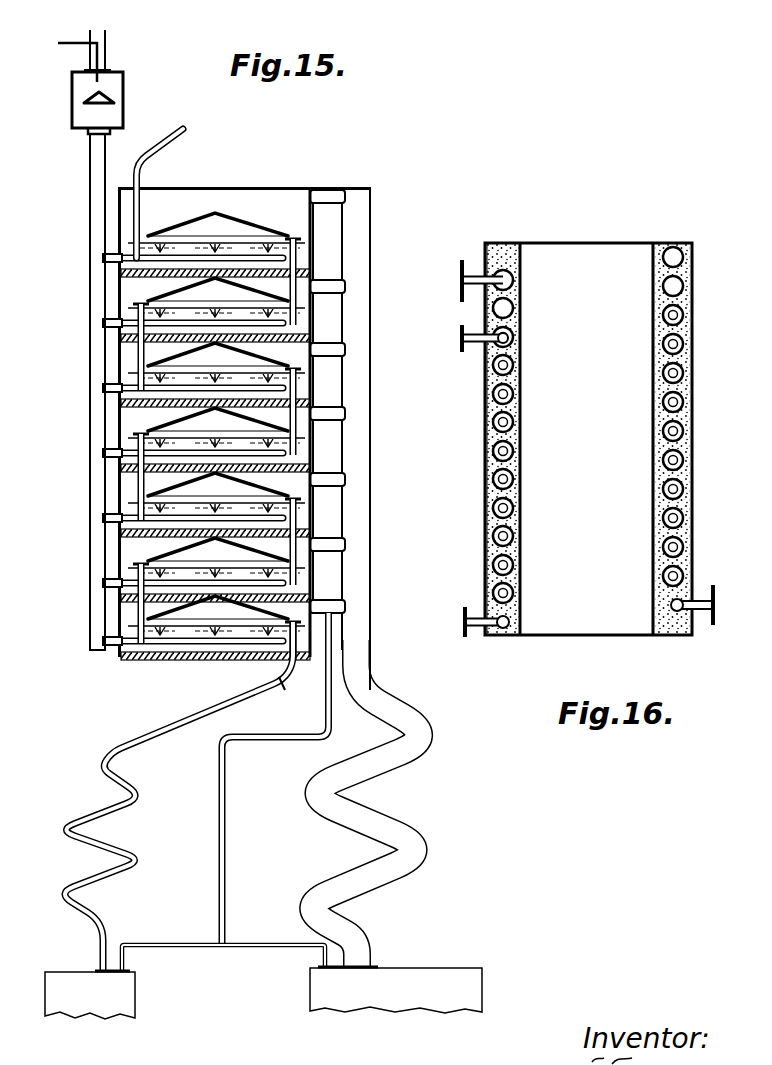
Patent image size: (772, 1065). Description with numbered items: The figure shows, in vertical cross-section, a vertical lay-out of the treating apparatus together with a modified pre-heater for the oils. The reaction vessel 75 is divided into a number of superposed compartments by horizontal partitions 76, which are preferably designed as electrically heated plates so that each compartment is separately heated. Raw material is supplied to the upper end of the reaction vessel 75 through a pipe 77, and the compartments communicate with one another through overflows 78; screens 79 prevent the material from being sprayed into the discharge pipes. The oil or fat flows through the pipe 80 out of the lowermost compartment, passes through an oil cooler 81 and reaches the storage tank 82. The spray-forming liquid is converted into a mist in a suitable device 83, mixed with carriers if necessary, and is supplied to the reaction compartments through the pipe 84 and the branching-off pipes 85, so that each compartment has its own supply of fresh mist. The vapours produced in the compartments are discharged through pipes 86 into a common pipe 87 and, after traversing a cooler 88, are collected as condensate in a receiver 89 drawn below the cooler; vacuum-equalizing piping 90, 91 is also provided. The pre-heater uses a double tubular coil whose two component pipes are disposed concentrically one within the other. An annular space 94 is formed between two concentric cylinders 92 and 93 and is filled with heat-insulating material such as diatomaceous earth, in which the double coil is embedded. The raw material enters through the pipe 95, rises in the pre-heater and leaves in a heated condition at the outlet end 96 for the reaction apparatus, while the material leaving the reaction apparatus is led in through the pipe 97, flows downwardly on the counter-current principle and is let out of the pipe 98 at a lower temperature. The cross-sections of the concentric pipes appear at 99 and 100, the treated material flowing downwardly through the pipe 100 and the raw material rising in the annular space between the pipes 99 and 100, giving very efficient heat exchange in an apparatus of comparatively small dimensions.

In FIG. 15, the reaction vessel 75 is at (310, 225).
In FIG. 15, the horizontal partitions 76 is at (262, 278).
In FIG. 15, the pipe 77 is at (165, 143).
In FIG. 15, the overflows 78 is at (137, 352).
In FIG. 15, the screens 79 is at (235, 218).
In FIG. 15, the pipe 80 is at (172, 728).
In FIG. 15, the oil cooler 81 is at (179, 797).
In FIG. 15, the storage tank 82 is at (130, 994).
In FIG. 15, the mist-forming device 83 is at (124, 98).
In FIG. 15, the pipe 84 is at (92, 286).
In FIG. 15, the branching-off pipes 85 is at (105, 257).
In FIG. 15, the pipes 86 is at (325, 193).
In FIG. 15, the common pipe 87 is at (372, 557).
In FIG. 15, the cooler 88 is at (410, 830).
In FIG. 15, the foundation block 89 is at (410, 972).
In FIG. 15, the vacuum-equalizing piping 90 is at (293, 738).
In FIG. 15, the vacuum-equalizing piping 91 is at (182, 945).
In FIG. 16, the concentric cylinder 92 is at (692, 390).
In FIG. 16, the concentric cylinder 93 is at (652, 272).
In FIG. 16, the annular space 94 is at (692, 324).
In FIG. 16, the pipe 95 is at (705, 613).
In FIG. 16, the outlet end 96 is at (475, 276).
In FIG. 16, the pipe 97 is at (475, 345).
In FIG. 16, the pipe 98 is at (478, 632).
In FIG. 16, the outer concentric pipe 99 is at (487, 395).
In FIG. 16, the inner concentric pipe 100 is at (500, 402).